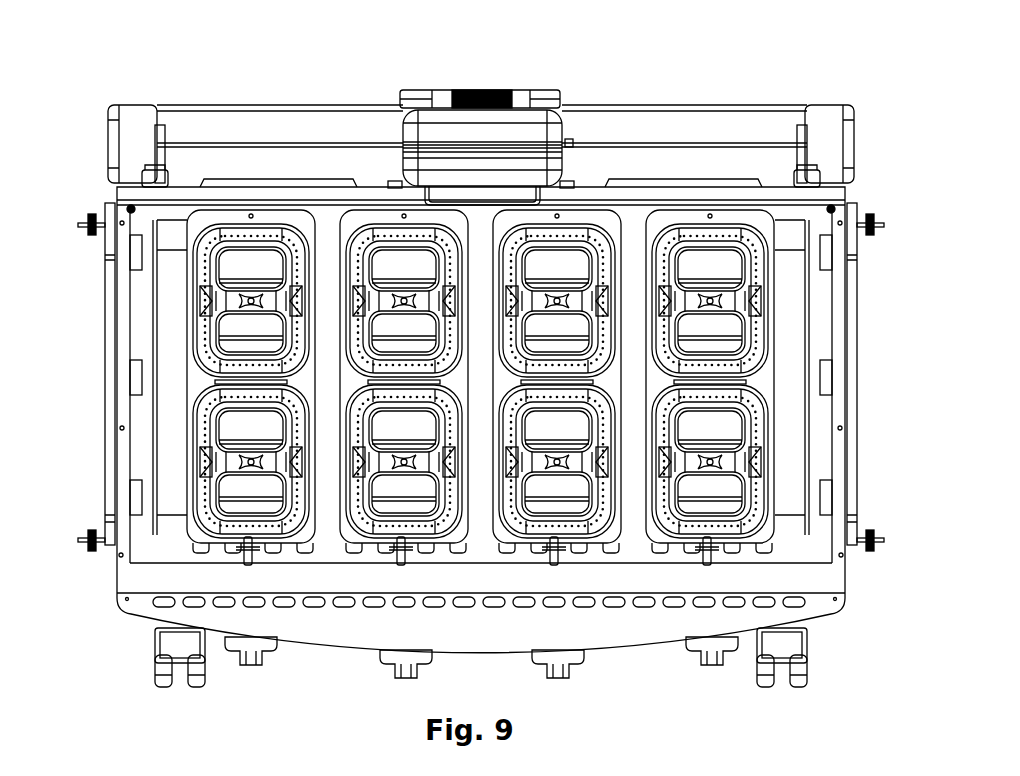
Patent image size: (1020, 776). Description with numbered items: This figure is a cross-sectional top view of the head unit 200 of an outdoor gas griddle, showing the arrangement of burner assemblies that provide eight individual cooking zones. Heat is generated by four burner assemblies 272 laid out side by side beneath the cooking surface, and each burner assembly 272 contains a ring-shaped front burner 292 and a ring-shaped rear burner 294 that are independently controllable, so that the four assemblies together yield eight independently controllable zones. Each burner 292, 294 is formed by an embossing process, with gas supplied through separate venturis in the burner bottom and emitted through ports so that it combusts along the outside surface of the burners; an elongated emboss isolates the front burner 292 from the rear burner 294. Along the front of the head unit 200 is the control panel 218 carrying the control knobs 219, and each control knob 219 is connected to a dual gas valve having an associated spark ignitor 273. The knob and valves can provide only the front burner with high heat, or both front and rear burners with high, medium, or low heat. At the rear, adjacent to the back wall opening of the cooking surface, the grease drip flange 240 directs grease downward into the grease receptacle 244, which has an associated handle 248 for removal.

The head unit 200 is at (880, 165).
The control panel 218 is at (340, 629).
The control knob 219 is at (250, 668).
The grease drip flange 240 is at (507, 194).
The grease receptacle 244 is at (441, 135).
The handle 248 is at (521, 97).
The burner assembly 272 is at (197, 227).
The spark ignitor 273 is at (245, 556).
The front burner 292 is at (197, 518).
The rear burner 294 is at (200, 335).